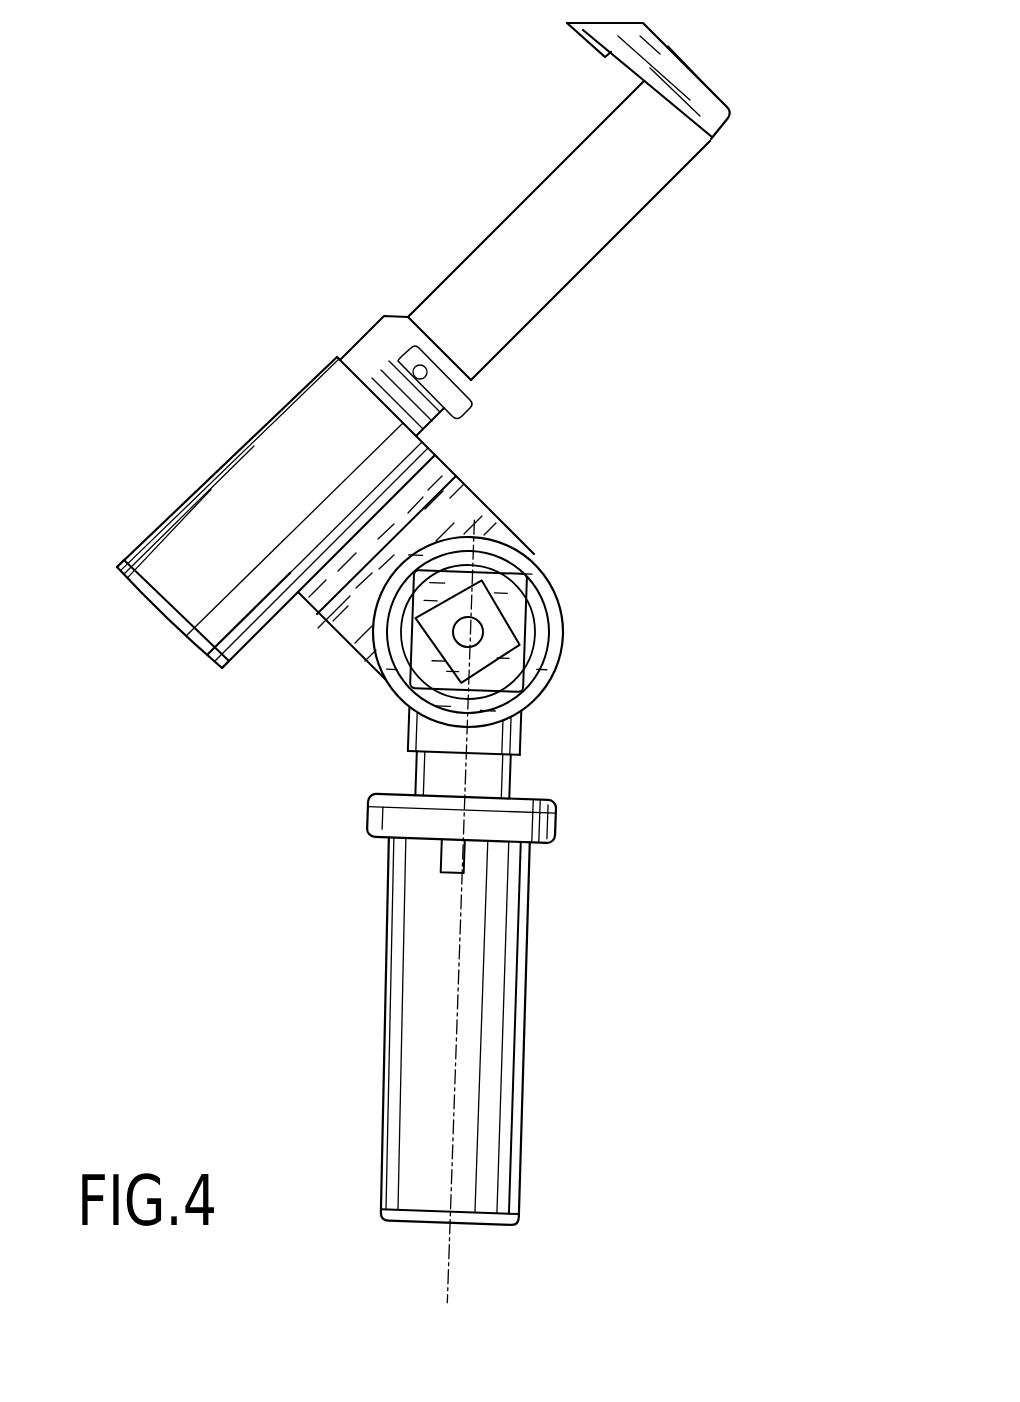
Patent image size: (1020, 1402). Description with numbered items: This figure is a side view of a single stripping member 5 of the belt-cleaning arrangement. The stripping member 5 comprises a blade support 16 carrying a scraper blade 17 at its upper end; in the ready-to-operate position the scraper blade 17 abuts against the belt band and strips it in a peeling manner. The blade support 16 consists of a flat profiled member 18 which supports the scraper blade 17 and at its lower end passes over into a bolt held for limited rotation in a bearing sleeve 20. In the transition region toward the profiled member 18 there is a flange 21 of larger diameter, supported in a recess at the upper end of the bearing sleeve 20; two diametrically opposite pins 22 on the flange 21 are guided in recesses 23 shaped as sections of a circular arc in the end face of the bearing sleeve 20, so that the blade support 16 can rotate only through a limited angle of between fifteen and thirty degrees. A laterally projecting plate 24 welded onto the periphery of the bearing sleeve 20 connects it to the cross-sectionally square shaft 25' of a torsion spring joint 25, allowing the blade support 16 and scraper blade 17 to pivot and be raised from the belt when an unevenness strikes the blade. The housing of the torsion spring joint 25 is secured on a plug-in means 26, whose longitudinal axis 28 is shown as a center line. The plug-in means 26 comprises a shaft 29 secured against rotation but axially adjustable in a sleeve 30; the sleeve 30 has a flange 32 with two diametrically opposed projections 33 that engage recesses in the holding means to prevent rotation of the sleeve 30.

The stripping member 5 is at (629, 190).
The blade support 16 is at (620, 190).
The scraper blade 17 is at (655, 40).
The flat profiled member 18 is at (622, 213).
The bearing sleeve 20 is at (318, 353).
The flange 21 is at (455, 328).
The pins 22 is at (430, 372).
The recesses 23 is at (470, 418).
The laterally projecting plate 24 is at (462, 508).
The torsion spring joint 25 is at (549, 632).
The square shaft 25' is at (570, 631).
The plug-in means 26 is at (469, 745).
The longitudinal axis 28 is at (450, 1277).
The shaft 29 is at (522, 743).
The sleeve 30 is at (550, 1031).
The flange 32 is at (542, 826).
The projections 33 is at (452, 862).